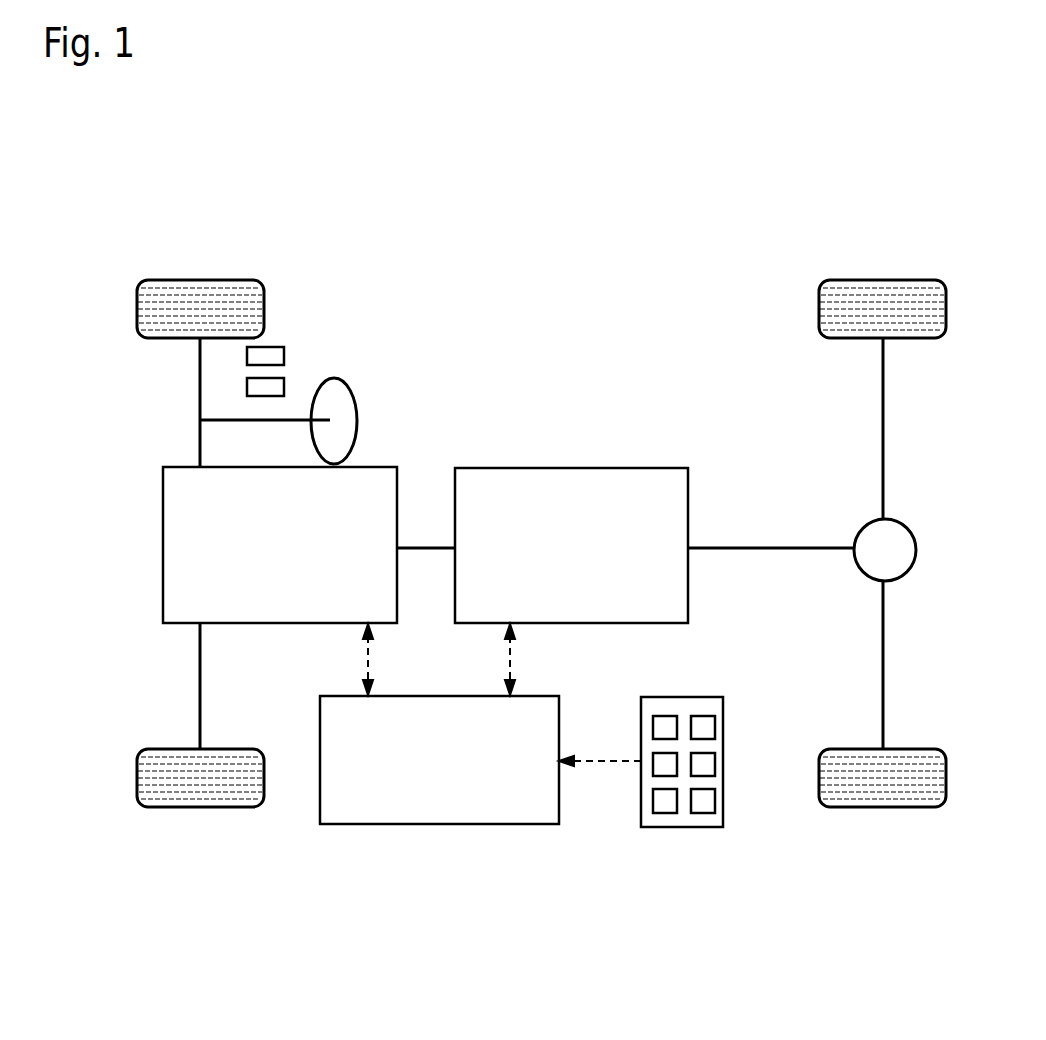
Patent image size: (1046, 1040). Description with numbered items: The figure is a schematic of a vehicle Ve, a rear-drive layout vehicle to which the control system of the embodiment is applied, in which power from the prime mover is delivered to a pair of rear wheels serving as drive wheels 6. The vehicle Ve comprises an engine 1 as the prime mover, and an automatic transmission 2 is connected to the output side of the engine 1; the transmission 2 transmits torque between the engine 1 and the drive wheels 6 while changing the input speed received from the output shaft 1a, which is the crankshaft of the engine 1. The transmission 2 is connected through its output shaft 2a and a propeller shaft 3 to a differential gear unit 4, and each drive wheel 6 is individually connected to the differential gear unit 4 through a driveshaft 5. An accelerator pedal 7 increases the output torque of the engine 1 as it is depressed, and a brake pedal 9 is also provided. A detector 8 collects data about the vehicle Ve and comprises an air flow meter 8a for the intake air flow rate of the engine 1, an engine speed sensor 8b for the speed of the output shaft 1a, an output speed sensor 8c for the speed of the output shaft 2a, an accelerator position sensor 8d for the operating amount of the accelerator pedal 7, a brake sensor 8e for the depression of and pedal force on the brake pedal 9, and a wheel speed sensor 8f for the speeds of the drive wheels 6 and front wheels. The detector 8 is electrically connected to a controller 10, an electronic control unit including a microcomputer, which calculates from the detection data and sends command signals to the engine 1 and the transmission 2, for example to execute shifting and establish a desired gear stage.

The vehicle Ve is at (343, 267).
The engine 1 is at (163, 549).
The output shaft 1a is at (427, 548).
The automatic transmission 2 is at (560, 468).
The output shaft 2a is at (712, 548).
The propeller shaft 3 is at (793, 548).
The differential gear unit 4 is at (917, 550).
The driveshaft 5 is at (883, 435).
The drive wheels 6 is at (888, 280).
The accelerator pedal 7 is at (284, 356).
The detector 8 is at (681, 793).
The air flow meter 8a is at (658, 727).
The engine speed sensor 8b is at (660, 765).
The output speed sensor 8c is at (664, 803).
The accelerator position sensor 8d is at (703, 727).
The brake sensor 8e is at (703, 763).
The wheel speed sensor 8f is at (703, 800).
The brake pedal 9 is at (284, 387).
The controller 10 is at (320, 724).